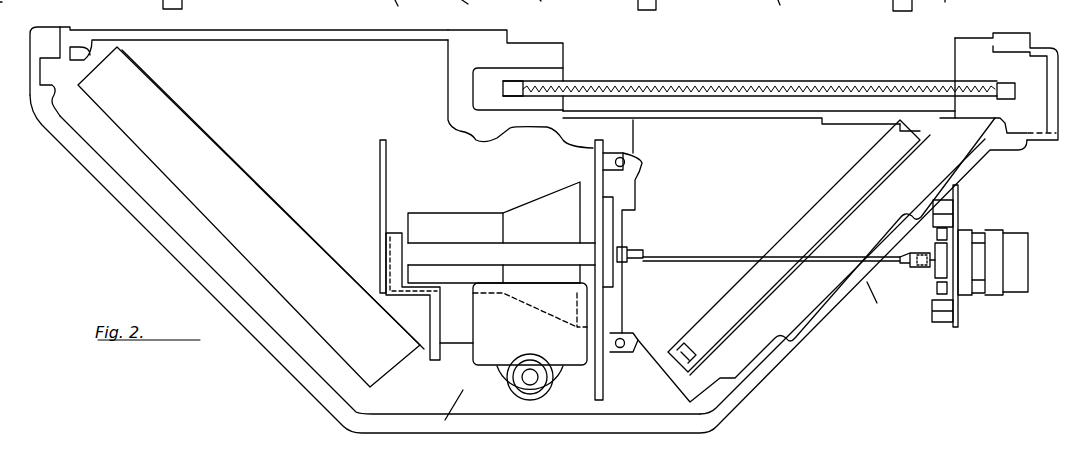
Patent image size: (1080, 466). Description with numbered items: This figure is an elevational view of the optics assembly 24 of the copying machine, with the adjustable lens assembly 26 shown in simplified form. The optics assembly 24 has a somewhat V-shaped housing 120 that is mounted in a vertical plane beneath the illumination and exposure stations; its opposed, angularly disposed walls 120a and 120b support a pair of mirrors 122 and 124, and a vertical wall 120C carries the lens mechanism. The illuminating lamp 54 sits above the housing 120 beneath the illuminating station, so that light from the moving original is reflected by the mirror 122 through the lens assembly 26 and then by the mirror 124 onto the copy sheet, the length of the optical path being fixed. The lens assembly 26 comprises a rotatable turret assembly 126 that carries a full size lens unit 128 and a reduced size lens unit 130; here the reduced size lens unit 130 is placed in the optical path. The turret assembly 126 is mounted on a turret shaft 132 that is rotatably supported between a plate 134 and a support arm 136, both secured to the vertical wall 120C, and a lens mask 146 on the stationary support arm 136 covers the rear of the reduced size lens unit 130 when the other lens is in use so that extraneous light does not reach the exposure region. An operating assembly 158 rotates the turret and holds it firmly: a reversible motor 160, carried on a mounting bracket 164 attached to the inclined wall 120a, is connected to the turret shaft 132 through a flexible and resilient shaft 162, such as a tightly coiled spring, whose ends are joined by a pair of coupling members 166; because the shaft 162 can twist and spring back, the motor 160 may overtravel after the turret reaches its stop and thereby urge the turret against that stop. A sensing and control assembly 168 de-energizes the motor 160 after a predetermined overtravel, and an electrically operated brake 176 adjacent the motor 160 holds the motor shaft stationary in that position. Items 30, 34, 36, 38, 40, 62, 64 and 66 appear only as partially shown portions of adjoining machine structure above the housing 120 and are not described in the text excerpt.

The optics assembly 24 is at (88, 182).
The adjustable lens assembly 26 is at (463, 398).
The upper assembly 30 is at (791, 9).
The upper member 34 is at (9, 6).
The upper member 36 is at (547, 6).
The mount 38 is at (656, 5).
The mount 40 is at (182, 4).
The illuminating lamp 54 is at (712, 80).
The member 62 is at (481, 8).
The member 64 is at (924, 6).
The member 66 is at (396, 3).
The housing 120 is at (563, 52).
The inclined wall 120a is at (790, 342).
The angularly disposed wall 120b is at (150, 232).
The vertical wall 120C is at (822, 130).
The mirror 122 is at (813, 207).
The mirror 124 is at (198, 121).
The rotatable turret assembly 126 is at (490, 206).
The full size lens unit 128 is at (480, 357).
The reduced size lens unit 130 is at (540, 200).
The turret shaft 132 is at (532, 243).
The plate 134 is at (603, 184).
The support arm 136 is at (386, 253).
The lens mask 146 is at (388, 162).
The operating assembly 158 is at (880, 306).
The reversible motor 160 is at (975, 230).
The flexible and resilient shaft 162 is at (719, 256).
The mounting bracket 164 is at (958, 194).
The coupling members 166 is at (628, 248).
The sensing and control assembly 168 is at (923, 325).
The electrically operated brake 176 is at (1028, 258).